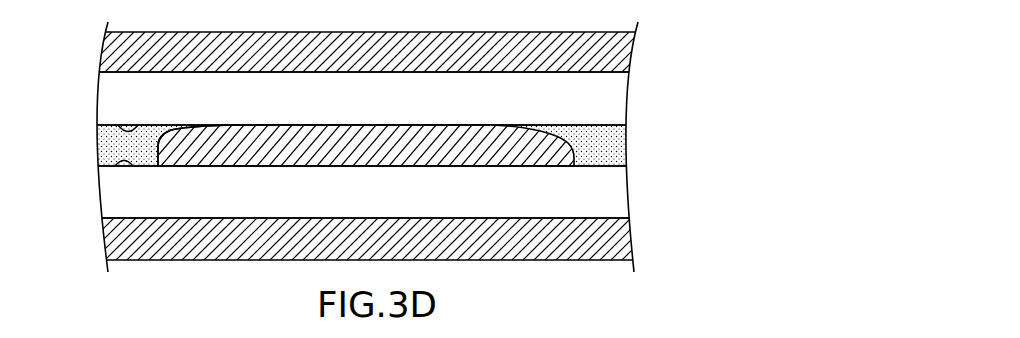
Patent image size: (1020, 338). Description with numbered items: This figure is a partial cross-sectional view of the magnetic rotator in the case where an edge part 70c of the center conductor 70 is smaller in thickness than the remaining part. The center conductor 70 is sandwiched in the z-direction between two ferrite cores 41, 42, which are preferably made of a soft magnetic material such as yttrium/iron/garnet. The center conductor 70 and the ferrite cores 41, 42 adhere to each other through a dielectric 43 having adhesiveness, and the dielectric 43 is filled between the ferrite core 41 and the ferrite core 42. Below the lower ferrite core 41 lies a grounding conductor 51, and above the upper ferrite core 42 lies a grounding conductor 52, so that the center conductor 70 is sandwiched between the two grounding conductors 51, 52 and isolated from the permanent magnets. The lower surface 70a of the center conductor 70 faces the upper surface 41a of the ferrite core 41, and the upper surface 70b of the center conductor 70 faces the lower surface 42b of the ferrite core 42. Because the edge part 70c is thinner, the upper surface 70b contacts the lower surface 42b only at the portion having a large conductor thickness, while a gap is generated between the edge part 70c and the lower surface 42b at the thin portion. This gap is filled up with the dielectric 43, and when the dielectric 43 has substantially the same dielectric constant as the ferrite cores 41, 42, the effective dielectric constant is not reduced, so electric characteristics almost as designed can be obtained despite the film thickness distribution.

The grounding conductor 52 is at (632, 43).
The ferrite core 42 is at (617, 97).
The dielectric 43 is at (620, 147).
The ferrite core 41 is at (617, 192).
The grounding conductor 51 is at (620, 236).
The center conductor 70 is at (446, 130).
The lower surface of the center conductor 70a is at (345, 167).
The upper surface of the center conductor 70b is at (338, 126).
The edge part of the center conductor 70c is at (166, 138).
The lower surface of the ferrite core 42b is at (125, 131).
The upper surface of the ferrite core 41a is at (118, 162).